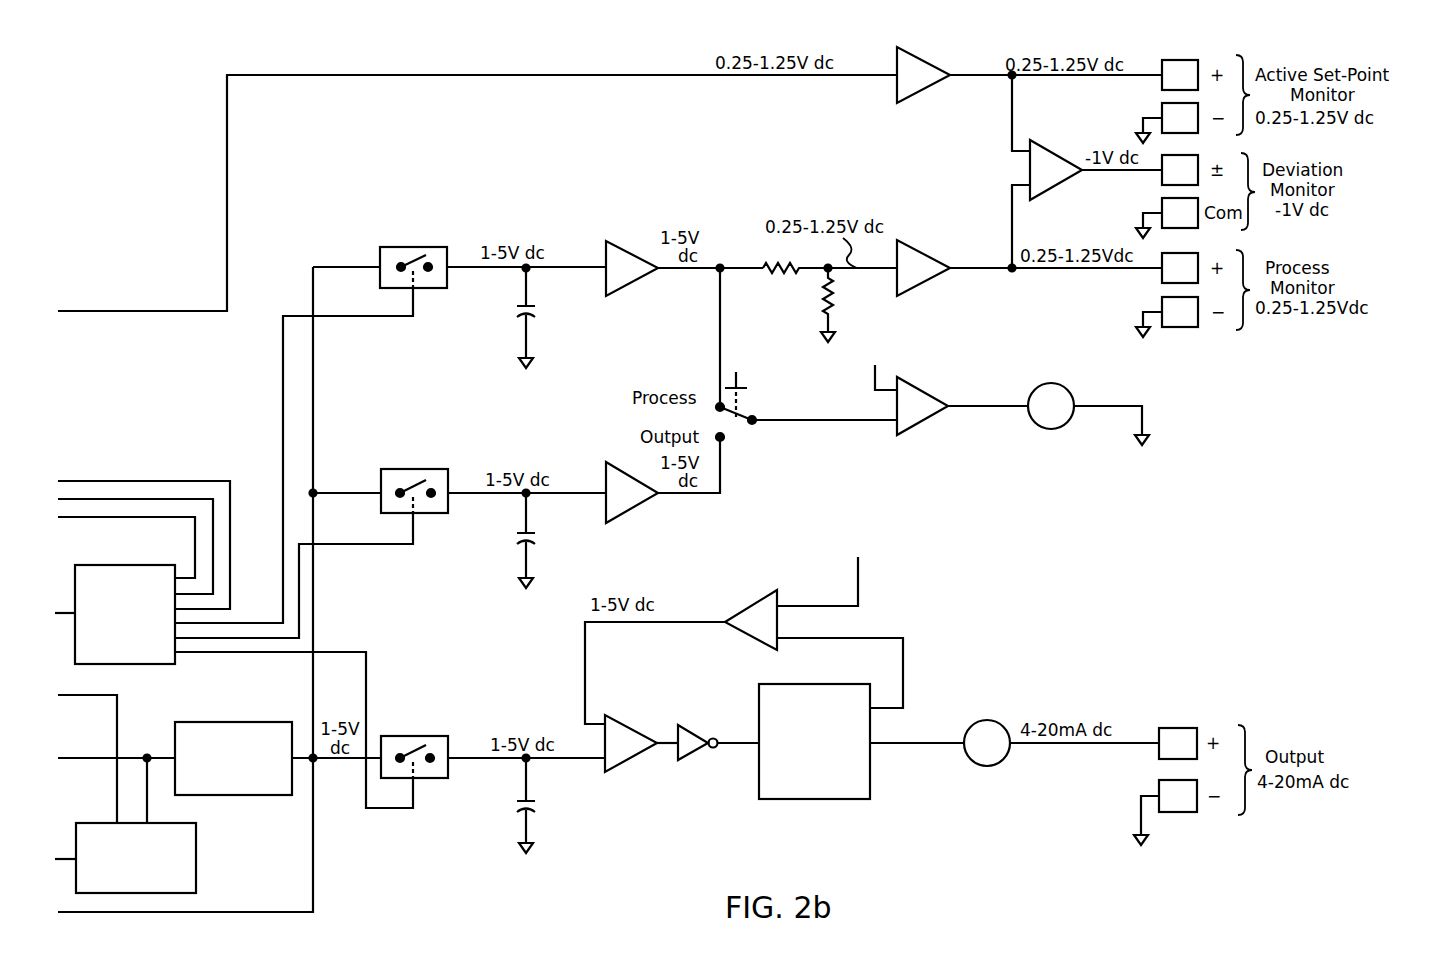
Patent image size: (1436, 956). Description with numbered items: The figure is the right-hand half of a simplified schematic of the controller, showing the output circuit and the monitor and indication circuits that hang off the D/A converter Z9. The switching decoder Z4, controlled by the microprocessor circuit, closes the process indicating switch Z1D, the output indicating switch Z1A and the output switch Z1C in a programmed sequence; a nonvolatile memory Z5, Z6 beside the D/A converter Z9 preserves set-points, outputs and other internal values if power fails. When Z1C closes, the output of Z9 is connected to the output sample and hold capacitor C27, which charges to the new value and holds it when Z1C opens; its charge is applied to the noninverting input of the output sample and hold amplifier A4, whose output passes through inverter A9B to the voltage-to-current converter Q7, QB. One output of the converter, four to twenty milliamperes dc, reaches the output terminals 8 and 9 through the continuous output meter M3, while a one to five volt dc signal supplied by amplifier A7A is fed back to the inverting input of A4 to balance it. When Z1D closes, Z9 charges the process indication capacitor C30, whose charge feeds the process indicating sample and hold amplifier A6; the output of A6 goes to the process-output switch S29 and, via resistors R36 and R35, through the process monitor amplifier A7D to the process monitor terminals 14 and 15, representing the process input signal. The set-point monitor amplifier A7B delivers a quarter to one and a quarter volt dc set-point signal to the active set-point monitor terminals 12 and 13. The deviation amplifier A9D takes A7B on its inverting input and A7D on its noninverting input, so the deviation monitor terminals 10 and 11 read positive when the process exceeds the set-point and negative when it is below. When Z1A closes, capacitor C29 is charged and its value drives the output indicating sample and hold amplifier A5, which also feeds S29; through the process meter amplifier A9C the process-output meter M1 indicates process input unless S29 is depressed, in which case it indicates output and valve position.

The output terminal + 8 is at (1178, 743).
The output terminal - 9 is at (1165, 812).
The deviation monitor terminal ± 10 is at (1180, 170).
The deviation monitor terminal Com 11 is at (1167, 218).
The active set-point monitor terminal + 12 is at (1180, 75).
The active set-point monitor terminal - 13 is at (1167, 123).
The process monitor terminal + 14 is at (1180, 268).
The process monitor terminal - 15 is at (1167, 317).
The set-point monitor amplifier A7B is at (1018, 58).
The deviation amplifier A9D is at (1087, 171).
The process monitor amplifier A7D is at (995, 238).
The process indicating switch Z1D is at (390, 404).
The process indication sample and hold capacitor C30 is at (498, 317).
The process indicating sample and hold amplifier A6 is at (658, 293).
The resistor R36 is at (797, 255).
The resistor R35 is at (810, 305).
The process-output switch S29 is at (777, 380).
The process meter amp A9C is at (948, 378).
The process-output meter M1 is at (1067, 439).
The output indicating switch Z1A is at (390, 521).
The output indication sample and hold capacitor C29 is at (495, 539).
The output indicating sample and hold amplifier A5 is at (666, 516).
The switching decoder Z4 is at (234, 644).
The D/A converter Z9 is at (219, 772).
The nonvolatile memory Z5 is at (125, 794).
The nonvolatile memory Z6 is at (125, 794).
The output switch Z1C is at (490, 724).
The output sample and hold capacitor C27 is at (502, 804).
The output sample and hold amplifier A4 is at (640, 721).
The inverter A9B is at (709, 719).
The voltage-to-current converter Q7 is at (861, 741).
The voltage to current converter QB is at (861, 741).
The amplifier A7A is at (809, 621).
The continuous output meter M3 is at (1040, 775).